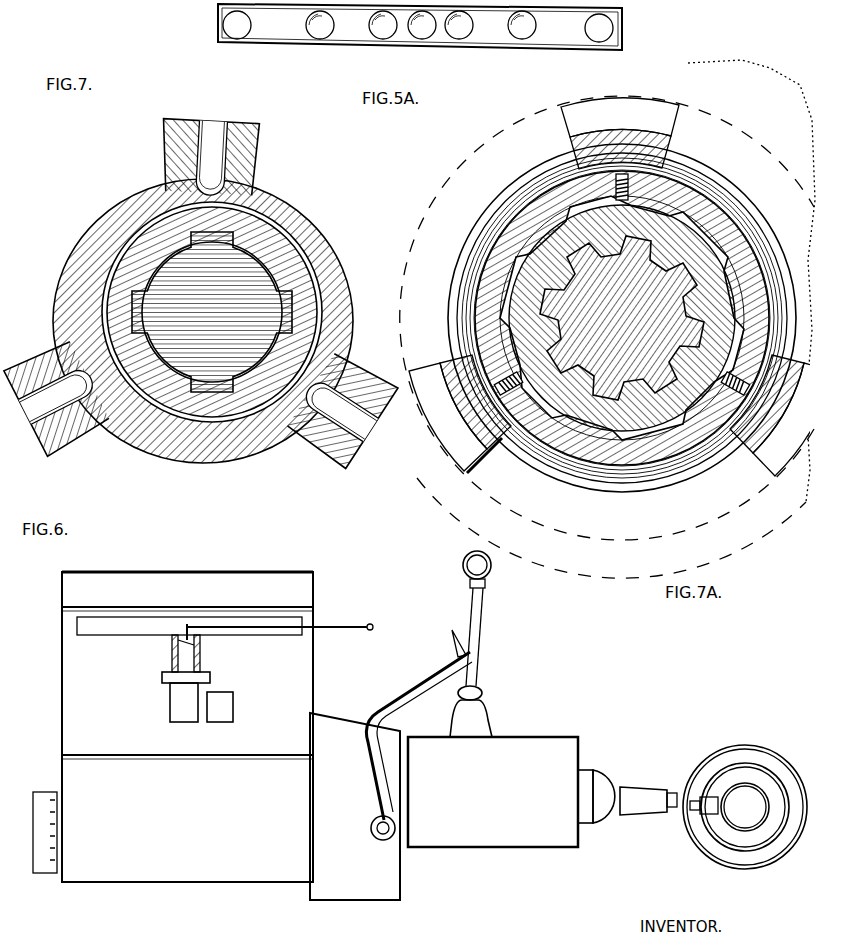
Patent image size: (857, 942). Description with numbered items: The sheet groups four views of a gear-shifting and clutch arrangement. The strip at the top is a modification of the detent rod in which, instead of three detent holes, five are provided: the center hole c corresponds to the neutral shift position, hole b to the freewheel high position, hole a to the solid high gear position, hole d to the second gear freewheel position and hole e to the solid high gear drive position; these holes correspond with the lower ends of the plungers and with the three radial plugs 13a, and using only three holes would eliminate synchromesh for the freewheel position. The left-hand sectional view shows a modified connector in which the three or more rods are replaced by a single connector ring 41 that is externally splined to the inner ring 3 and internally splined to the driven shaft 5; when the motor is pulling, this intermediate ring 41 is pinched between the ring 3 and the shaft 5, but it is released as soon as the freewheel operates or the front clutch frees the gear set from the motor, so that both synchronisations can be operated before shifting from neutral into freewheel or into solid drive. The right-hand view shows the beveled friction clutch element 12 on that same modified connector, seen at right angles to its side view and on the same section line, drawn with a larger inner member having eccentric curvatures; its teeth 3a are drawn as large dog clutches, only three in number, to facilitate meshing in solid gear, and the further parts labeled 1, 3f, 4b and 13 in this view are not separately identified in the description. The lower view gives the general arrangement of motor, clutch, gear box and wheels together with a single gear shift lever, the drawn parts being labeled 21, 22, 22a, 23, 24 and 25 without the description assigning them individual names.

In FIG. 7A, the brake casing / frame (broken-away outline) 1 is at (718, 75).
In FIG. 7, the inner ring 3 is at (286, 163).
In FIG. 7A, the inner ring 3 is at (456, 246).
In FIG. 7A, the teeth 3a is at (668, 138).
In FIG. 7, the housing lug 3f is at (268, 140).
In FIG. 7A, the housing lug 3f is at (622, 104).
In FIG. 7, the connector ring 41 is at (272, 242).
In FIG. 7A, the connector ring 41 is at (700, 240).
In FIG. 7A, the rotor ring groove 4b is at (740, 290).
In FIG. 7, the driven shaft 5 is at (262, 292).
In FIG. 7A, the driven shaft 5 is at (622, 318).
In FIG. 6, the driven shaft 5 is at (676, 790).
In FIG. 7A, the beveled friction clutch element 12 is at (694, 180).
In FIG. 7A, the toothed rotor member 13 is at (706, 210).
In FIG. 5A, the radial plugs 13a is at (240, 32).
In FIG. 7A, the radial plugs 13a is at (608, 180).
In FIG. 5A, the hole a is at (322, 30).
In FIG. 5A, the hole b is at (382, 32).
In FIG. 5A, the center hole c is at (421, 32).
In FIG. 5A, the hole d is at (458, 32).
In FIG. 5A, the hole e is at (520, 32).
In FIG. 6, the gear housing 21 is at (530, 736).
In FIG. 6, the control lever 22 is at (480, 675).
In FIG. 6, the connecting rod 22a is at (366, 622).
In FIG. 6, the link arm 23 is at (364, 720).
In FIG. 6, the control box 24 is at (280, 574).
In FIG. 6, the hand wheel 25 is at (741, 745).